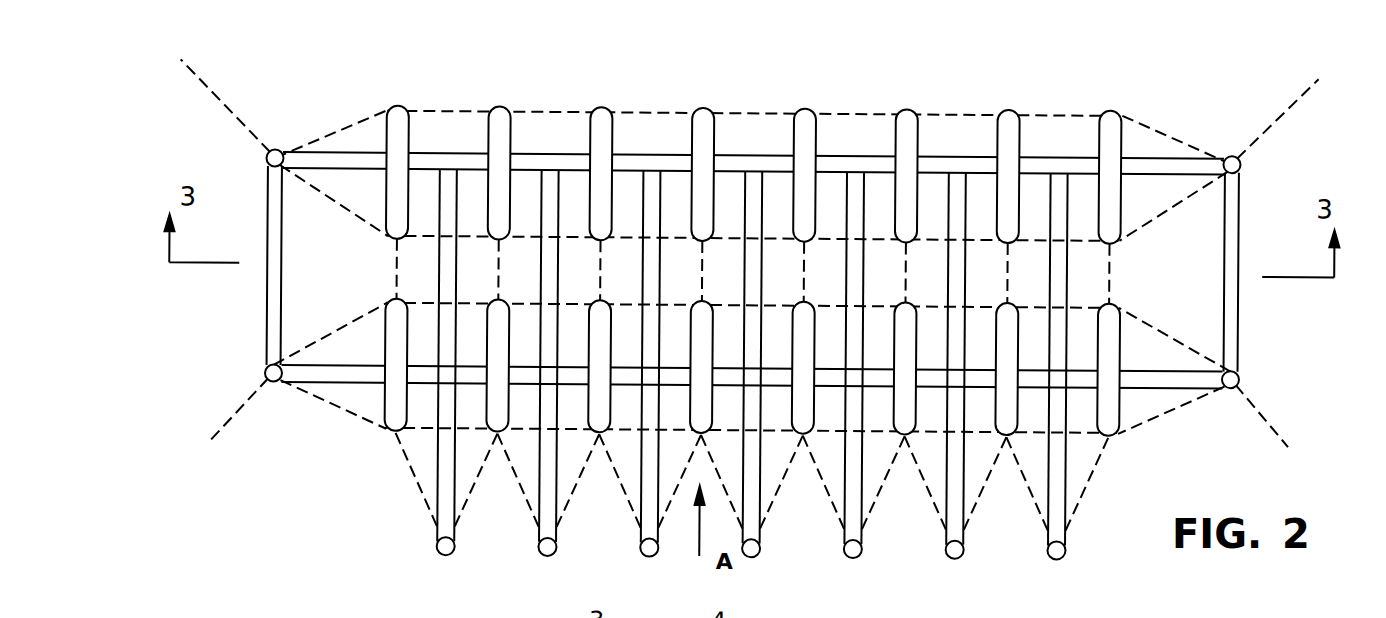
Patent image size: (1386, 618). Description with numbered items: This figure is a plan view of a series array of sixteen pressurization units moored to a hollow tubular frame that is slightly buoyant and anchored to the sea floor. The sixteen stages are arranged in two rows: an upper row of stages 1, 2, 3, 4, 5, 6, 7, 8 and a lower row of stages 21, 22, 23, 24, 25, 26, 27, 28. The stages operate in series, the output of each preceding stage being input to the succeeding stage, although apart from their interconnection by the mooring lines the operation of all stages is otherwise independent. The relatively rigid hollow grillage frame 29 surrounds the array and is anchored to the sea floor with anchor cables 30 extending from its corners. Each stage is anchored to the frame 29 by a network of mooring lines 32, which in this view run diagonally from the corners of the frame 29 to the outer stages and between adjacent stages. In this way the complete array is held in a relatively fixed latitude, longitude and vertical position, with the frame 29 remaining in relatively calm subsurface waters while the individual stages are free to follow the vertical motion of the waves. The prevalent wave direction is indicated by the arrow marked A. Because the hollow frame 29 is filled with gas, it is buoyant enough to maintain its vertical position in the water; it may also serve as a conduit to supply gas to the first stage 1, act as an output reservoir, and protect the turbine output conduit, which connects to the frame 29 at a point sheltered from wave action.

The first stage 1 is at (396, 105).
The stage 2 is at (499, 105).
The stage 3 is at (601, 105).
The stage 4 is at (703, 105).
The stage 5 is at (803, 105).
The stage 6 is at (906, 105).
The stage 7 is at (1008, 105).
The stage 8 is at (1112, 105).
The stage 21 is at (1115, 302).
The stage 22 is at (1017, 298).
The stage 23 is at (915, 298).
The stage 24 is at (813, 298).
The stage 25 is at (711, 298).
The stage 26 is at (609, 298).
The stage 27 is at (507, 298).
The stage 28 is at (405, 298).
The hollow grillage frame 29 is at (267, 285).
The anchor cables 30 is at (213, 87).
The mooring lines 32 is at (298, 181).